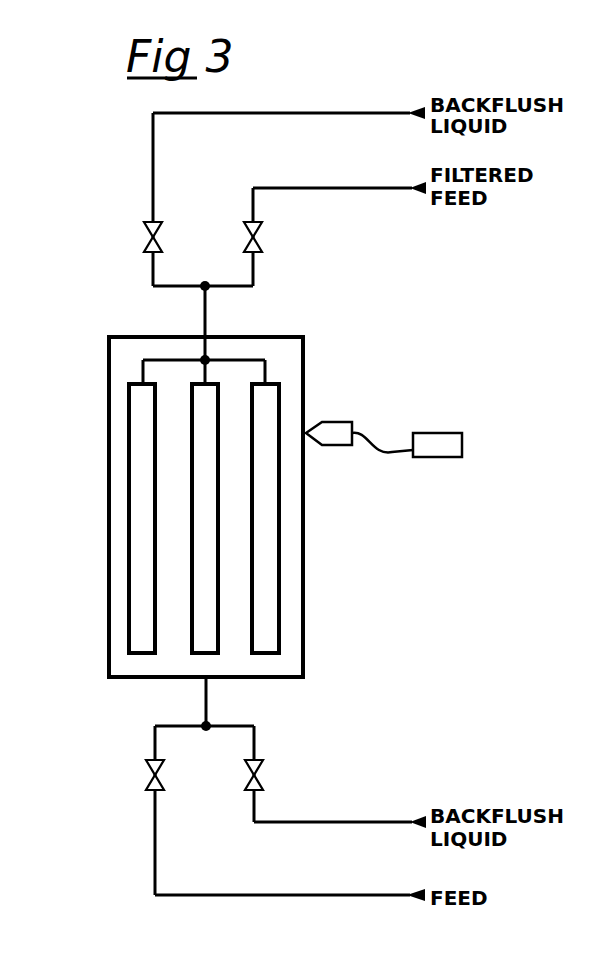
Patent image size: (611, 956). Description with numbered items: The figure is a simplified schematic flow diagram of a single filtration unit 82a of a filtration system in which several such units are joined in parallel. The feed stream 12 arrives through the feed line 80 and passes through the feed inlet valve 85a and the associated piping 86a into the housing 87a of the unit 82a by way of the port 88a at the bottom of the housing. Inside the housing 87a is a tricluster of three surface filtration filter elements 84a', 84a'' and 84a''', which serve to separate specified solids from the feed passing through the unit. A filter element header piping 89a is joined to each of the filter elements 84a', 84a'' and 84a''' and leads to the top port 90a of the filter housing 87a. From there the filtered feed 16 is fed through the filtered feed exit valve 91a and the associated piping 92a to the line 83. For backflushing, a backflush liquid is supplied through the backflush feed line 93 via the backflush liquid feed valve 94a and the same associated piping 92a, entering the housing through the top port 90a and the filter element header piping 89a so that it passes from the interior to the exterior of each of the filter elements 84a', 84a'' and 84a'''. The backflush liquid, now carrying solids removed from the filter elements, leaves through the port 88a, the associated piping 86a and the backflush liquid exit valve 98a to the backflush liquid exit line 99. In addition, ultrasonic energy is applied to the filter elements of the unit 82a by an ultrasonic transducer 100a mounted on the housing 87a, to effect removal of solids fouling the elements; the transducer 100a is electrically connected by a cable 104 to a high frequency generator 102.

The feed stream 12 is at (354, 892).
The filtered feed 16 is at (384, 190).
The feed line 80 is at (275, 895).
The filtration unit 82a is at (89, 363).
The filtered feed line 83 is at (300, 189).
The surface filtration filter element 84a' is at (98, 518).
The surface filtration filter element 84a'' is at (130, 518).
The surface filtration filter element 84a''' is at (316, 518).
The feed inlet valve 85a is at (145, 775).
The associated piping 86a is at (172, 724).
The housing 87a is at (109, 637).
The port 88a is at (210, 683).
The filter element header piping 89a is at (237, 358).
The top port 90a is at (203, 336).
The filtered feed exit valve 91a is at (262, 236).
The associated piping 92a is at (224, 284).
The backflush feed line 93 is at (318, 113).
The backflush liquid feed valve 94a is at (143, 237).
The backflush liquid exit valve 98a is at (260, 776).
The backflush liquid exit line 99 is at (327, 822).
The ultrasonic transducer 100a is at (336, 422).
The high frequency generator 102 is at (448, 433).
The cable 104 is at (376, 432).